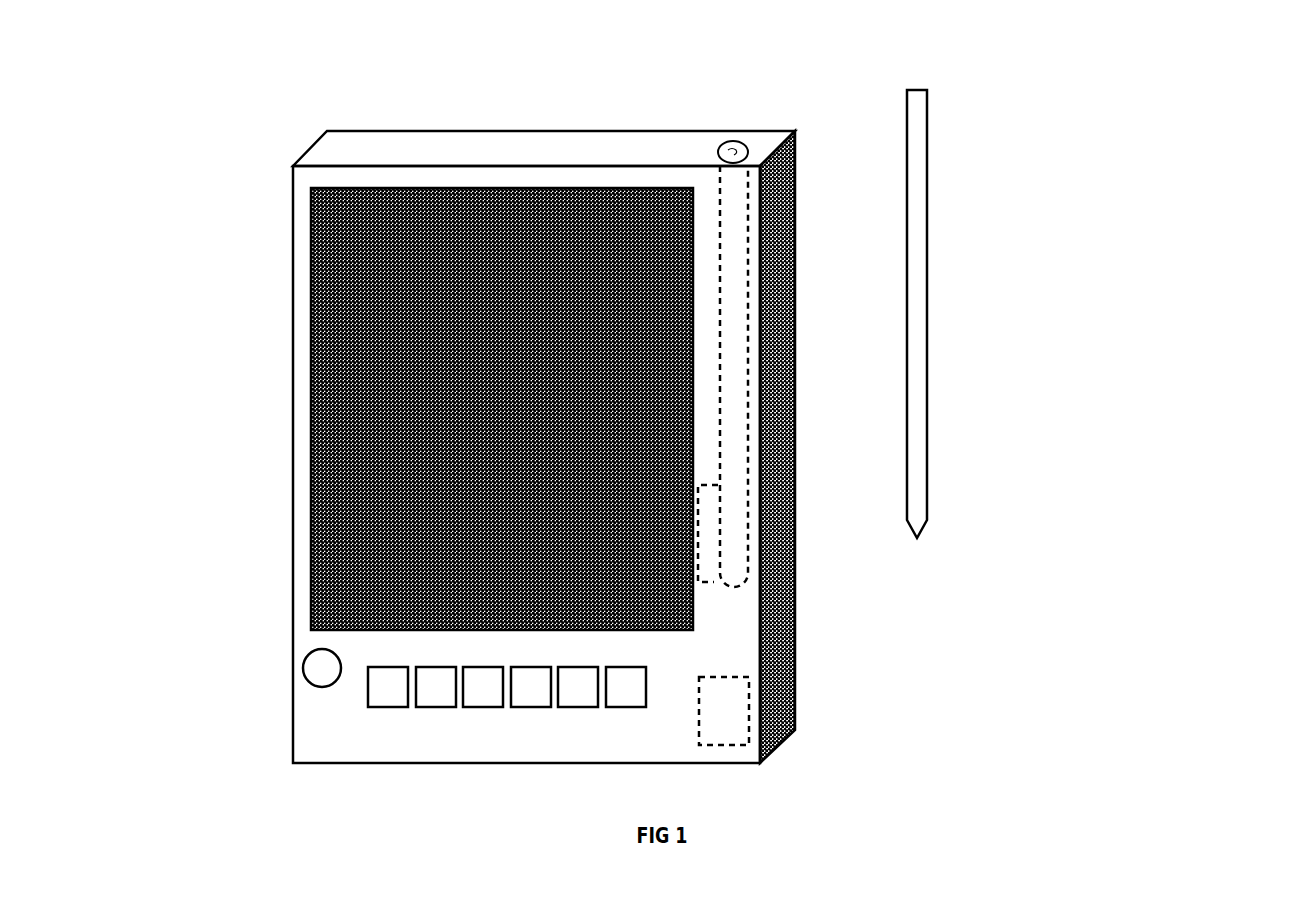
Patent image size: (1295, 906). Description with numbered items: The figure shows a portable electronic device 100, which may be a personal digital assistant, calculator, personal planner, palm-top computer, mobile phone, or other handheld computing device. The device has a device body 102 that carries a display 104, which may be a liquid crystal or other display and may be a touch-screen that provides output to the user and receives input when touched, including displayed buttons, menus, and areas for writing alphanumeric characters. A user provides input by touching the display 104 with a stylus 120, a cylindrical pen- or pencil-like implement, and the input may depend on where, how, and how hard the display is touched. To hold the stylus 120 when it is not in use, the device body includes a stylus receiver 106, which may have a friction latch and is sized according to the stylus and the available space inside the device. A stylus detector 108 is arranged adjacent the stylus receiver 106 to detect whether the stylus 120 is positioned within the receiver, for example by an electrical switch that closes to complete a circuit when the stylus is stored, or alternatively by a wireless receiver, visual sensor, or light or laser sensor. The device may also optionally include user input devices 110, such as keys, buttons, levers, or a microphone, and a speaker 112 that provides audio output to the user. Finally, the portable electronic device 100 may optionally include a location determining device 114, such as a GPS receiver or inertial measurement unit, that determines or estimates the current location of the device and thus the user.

The portable electronic device 100 is at (1107, 198).
The device body 102 is at (500, 152).
The display 104 is at (409, 409).
The stylus receiver 106 is at (735, 150).
The stylus detector 108 is at (704, 582).
The user input devices 110 is at (368, 697).
The speaker 112 is at (322, 668).
The location determining device 114 is at (749, 720).
The stylus 120 is at (927, 153).